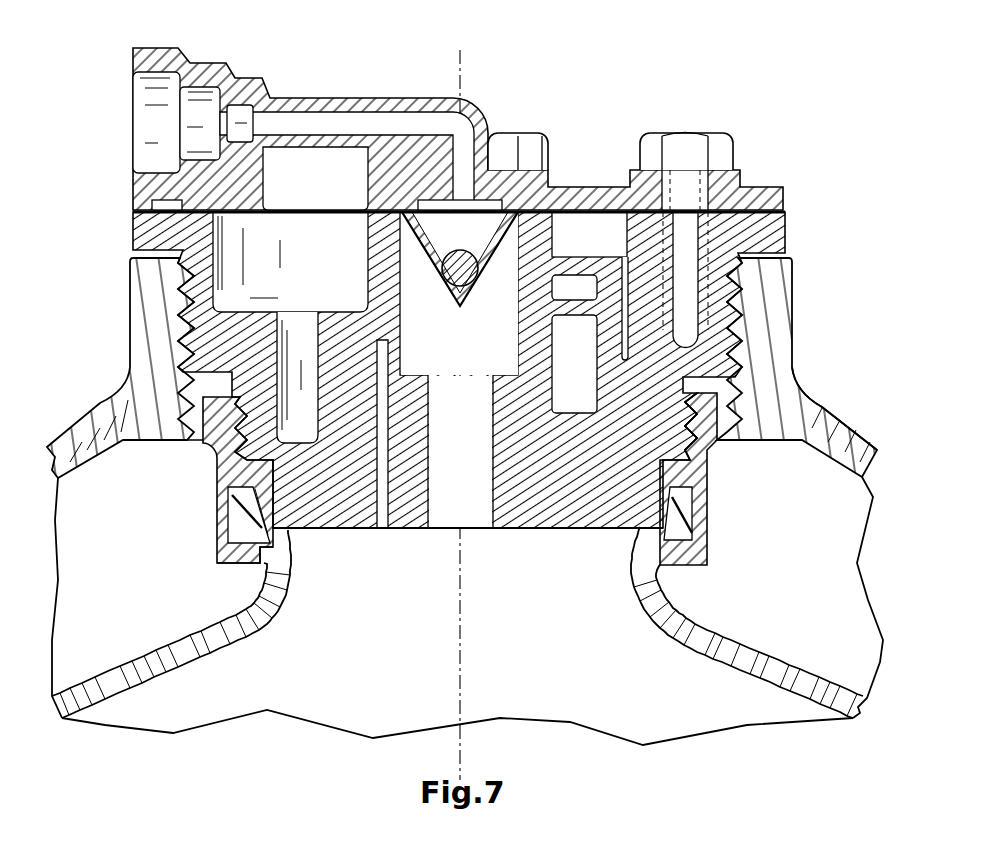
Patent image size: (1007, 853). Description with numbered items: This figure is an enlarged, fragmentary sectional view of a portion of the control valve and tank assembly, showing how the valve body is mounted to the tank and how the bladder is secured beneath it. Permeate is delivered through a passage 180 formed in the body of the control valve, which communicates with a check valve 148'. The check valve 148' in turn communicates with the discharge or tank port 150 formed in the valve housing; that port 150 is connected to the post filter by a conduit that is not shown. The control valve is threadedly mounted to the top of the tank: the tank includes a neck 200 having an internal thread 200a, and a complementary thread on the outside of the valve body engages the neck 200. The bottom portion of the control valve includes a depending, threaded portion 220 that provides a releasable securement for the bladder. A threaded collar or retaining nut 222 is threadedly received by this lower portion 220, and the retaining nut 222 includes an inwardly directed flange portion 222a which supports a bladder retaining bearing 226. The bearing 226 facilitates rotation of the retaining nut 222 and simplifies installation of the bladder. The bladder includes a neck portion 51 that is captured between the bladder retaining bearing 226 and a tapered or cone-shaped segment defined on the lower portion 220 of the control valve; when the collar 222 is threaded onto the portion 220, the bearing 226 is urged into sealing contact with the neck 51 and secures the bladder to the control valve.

The discharge/tank port 150 is at (188, 88).
The check valve 148' is at (495, 204).
The passage 180 is at (493, 473).
The neck 200 is at (765, 310).
The internal thread 200a is at (743, 357).
The threaded portion 220 is at (706, 448).
The retaining nut 222 is at (213, 492).
The flange portion 222a is at (240, 568).
The bladder retaining bearing 226 is at (245, 522).
The neck portion 51 is at (690, 531).